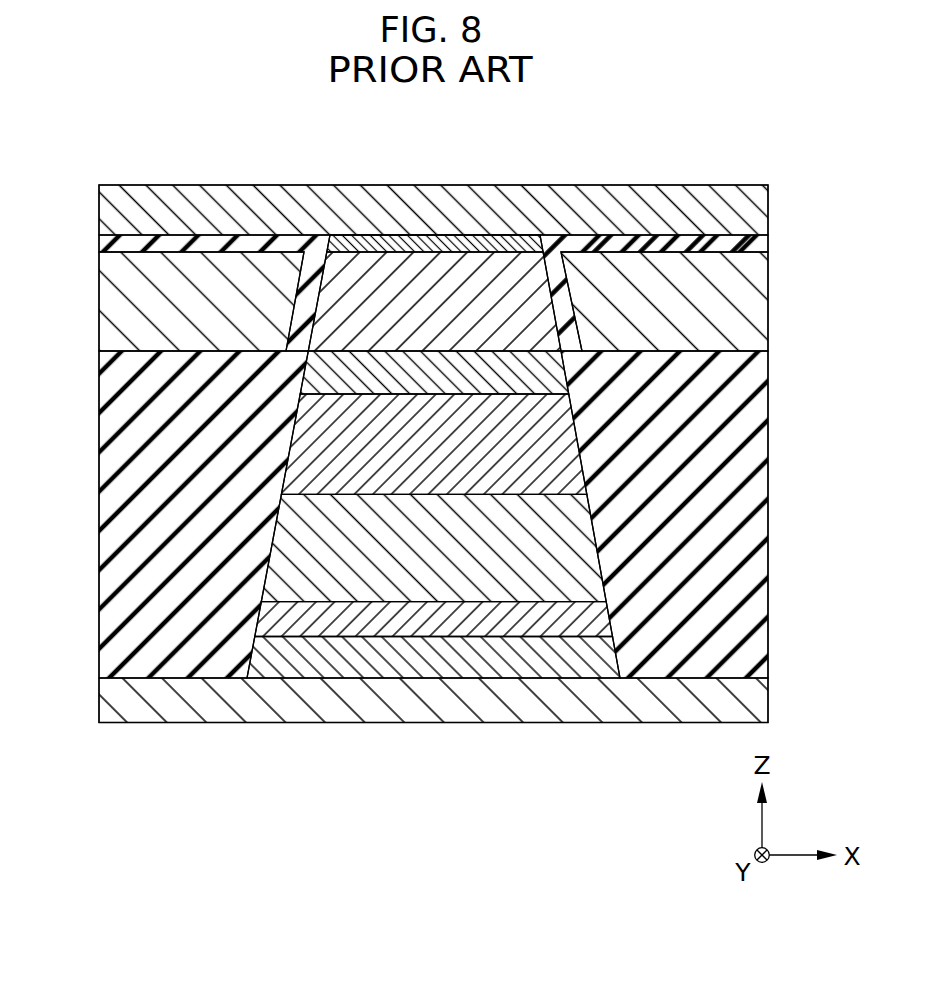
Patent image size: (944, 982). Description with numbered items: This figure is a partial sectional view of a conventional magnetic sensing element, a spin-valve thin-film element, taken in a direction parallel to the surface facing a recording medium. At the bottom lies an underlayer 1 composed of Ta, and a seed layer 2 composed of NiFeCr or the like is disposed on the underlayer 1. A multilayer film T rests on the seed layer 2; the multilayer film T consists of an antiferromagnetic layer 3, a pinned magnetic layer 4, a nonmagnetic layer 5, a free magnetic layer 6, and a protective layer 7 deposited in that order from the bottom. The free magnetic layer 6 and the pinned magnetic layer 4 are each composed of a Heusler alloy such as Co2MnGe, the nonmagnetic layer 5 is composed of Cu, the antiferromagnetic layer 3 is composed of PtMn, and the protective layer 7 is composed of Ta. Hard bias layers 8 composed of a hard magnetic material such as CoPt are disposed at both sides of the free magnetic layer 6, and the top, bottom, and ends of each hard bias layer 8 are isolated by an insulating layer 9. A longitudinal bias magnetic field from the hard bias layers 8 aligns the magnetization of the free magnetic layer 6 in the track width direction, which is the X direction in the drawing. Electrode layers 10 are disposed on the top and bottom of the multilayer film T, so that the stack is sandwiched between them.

The underlayer 1 is at (540, 662).
The seed layer 2 is at (493, 620).
The antiferromagnetic layer 3 is at (437, 583).
The pinned magnetic layer 4 is at (363, 472).
The nonmagnetic layer 5 is at (461, 369).
The free magnetic layer 6 is at (399, 268).
The protective layer 7 is at (511, 243).
The hard bias layers 8 is at (112, 330).
The insulating layer 9 is at (110, 245).
The electrode layers 10 is at (746, 212).
The multilayer film T is at (361, 222).